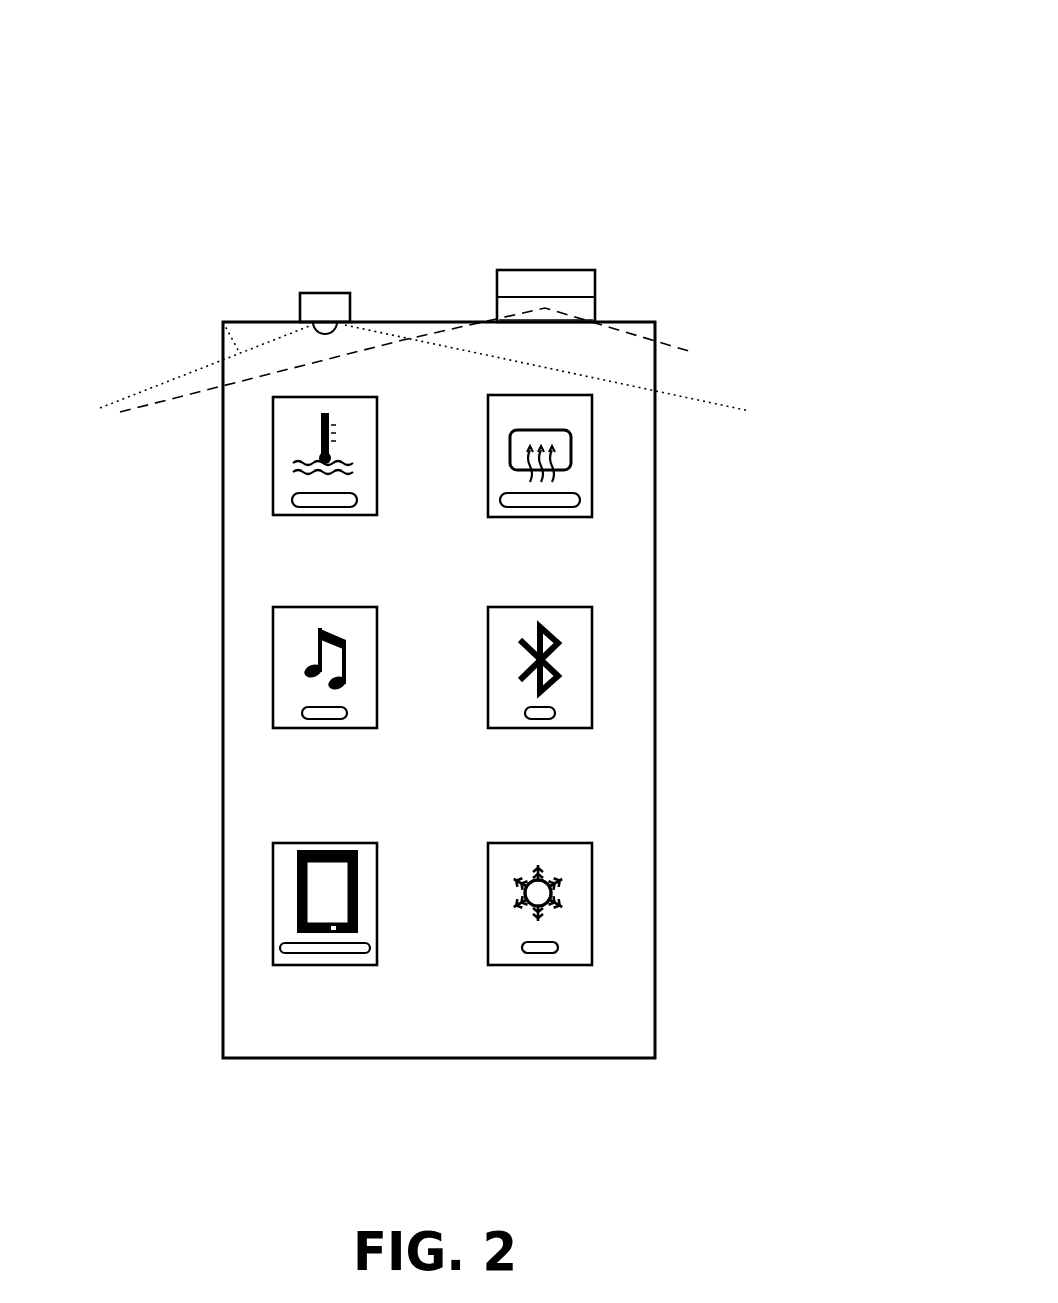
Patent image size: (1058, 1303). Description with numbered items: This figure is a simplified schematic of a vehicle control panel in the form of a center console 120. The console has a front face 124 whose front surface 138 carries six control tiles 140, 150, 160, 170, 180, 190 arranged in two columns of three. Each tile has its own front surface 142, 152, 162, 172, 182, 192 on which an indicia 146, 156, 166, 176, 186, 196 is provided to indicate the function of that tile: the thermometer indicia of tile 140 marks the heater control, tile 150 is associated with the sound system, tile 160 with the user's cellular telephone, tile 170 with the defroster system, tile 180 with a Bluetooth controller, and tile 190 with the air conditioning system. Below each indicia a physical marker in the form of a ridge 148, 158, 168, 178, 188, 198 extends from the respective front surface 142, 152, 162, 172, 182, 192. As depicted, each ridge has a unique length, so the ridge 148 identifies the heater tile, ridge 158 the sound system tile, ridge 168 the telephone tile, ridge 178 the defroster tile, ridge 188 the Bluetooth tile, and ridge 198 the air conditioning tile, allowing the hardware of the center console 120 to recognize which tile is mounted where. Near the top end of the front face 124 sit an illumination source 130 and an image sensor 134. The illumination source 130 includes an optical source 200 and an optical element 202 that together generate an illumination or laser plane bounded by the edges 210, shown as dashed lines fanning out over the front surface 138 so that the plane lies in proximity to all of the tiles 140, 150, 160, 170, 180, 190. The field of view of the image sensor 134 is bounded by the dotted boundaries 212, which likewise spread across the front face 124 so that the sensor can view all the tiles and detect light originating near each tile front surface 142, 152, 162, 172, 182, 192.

The center console 120 is at (888, 37).
The front face 124 is at (618, 578).
The illumination source 130 is at (600, 295).
The image sensor 134 is at (325, 302).
The front surface 138 is at (605, 778).
The control tile 140 is at (270, 403).
The front surface 142 is at (290, 433).
The indicia 146 is at (300, 462).
The ridge 148 is at (293, 499).
The control tile 150 is at (270, 613).
The front surface 152 is at (290, 644).
The indicia 156 is at (305, 670).
The ridge 158 is at (303, 712).
The control tile 160 is at (270, 848).
The front surface 162 is at (285, 880).
The indicia 166 is at (302, 918).
The ridge 168 is at (281, 947).
The control tile 170 is at (600, 403).
The front surface 172 is at (577, 436).
The indicia 176 is at (562, 457).
The ridge 178 is at (580, 499).
The control tile 180 is at (600, 613).
The front surface 182 is at (577, 645).
The indicia 186 is at (560, 672).
The ridge 188 is at (556, 712).
The control tile 190 is at (600, 848).
The front surface 192 is at (578, 880).
The indicia 196 is at (553, 908).
The ridge 198 is at (559, 946).
The optical source 200 is at (552, 284).
The optical element 202 is at (497, 318).
The edges 210 is at (448, 330).
The boundaries 212 is at (223, 322).